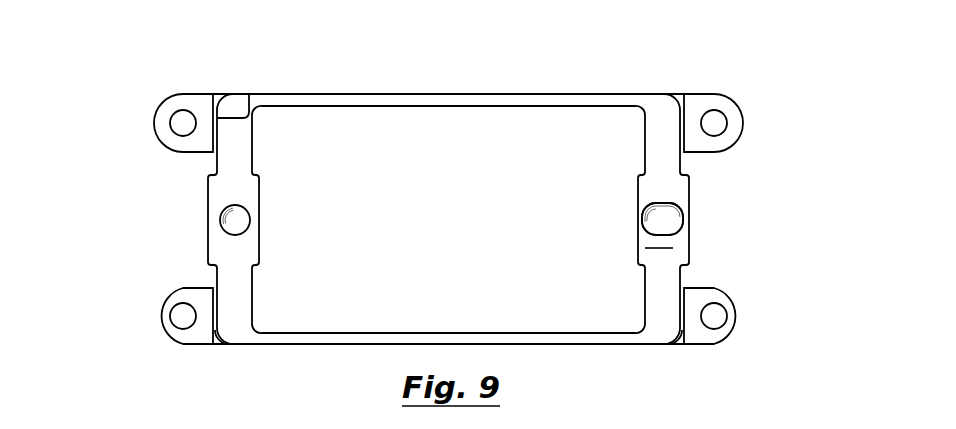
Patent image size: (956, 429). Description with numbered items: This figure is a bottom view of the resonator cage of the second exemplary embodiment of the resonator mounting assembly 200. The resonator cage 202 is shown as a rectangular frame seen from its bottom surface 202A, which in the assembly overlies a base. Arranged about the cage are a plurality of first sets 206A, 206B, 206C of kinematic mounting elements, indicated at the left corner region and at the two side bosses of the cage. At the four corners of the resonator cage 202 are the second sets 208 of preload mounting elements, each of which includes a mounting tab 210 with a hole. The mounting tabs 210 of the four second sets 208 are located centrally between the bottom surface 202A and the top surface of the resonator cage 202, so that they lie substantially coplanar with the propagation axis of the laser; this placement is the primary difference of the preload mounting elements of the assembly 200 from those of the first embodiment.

The resonator mounting assembly 200 is at (416, 93).
The resonator cage 202 is at (497, 92).
The bottom surface 202A is at (658, 250).
The first set of kinematic mounting elements 206A is at (250, 122).
The first set of kinematic mounting elements 206B is at (249, 213).
The first set of kinematic mounting elements 206C is at (640, 211).
The second set of preload mounting elements 208 is at (157, 97).
The mounting tab 210 is at (170, 128).